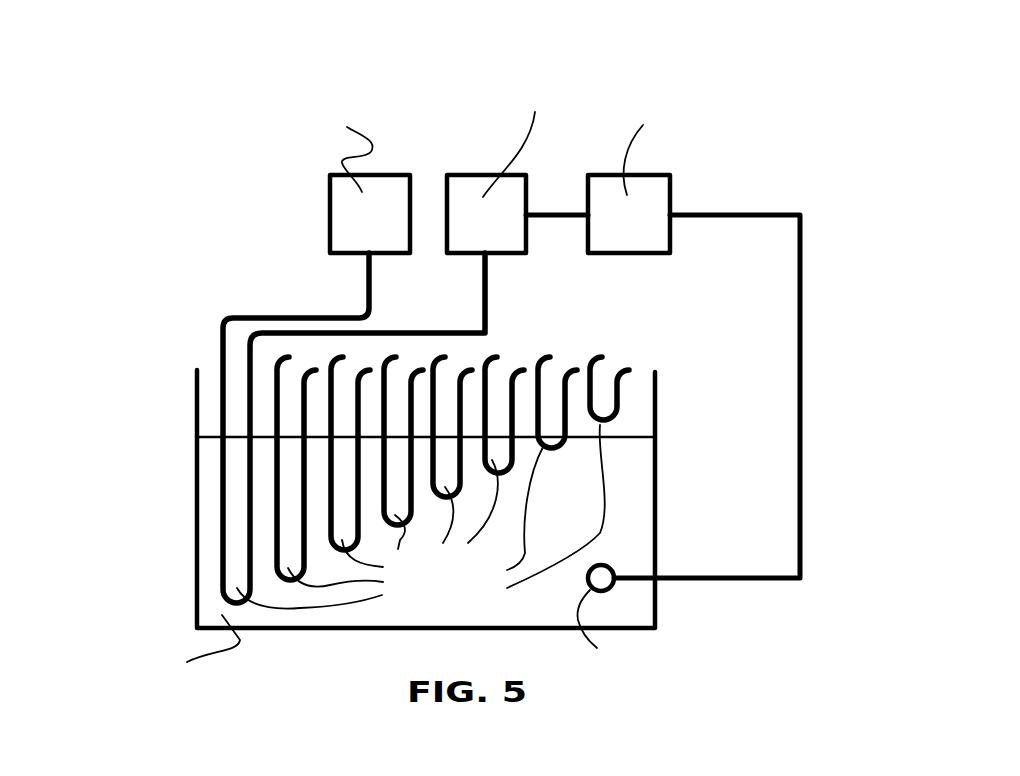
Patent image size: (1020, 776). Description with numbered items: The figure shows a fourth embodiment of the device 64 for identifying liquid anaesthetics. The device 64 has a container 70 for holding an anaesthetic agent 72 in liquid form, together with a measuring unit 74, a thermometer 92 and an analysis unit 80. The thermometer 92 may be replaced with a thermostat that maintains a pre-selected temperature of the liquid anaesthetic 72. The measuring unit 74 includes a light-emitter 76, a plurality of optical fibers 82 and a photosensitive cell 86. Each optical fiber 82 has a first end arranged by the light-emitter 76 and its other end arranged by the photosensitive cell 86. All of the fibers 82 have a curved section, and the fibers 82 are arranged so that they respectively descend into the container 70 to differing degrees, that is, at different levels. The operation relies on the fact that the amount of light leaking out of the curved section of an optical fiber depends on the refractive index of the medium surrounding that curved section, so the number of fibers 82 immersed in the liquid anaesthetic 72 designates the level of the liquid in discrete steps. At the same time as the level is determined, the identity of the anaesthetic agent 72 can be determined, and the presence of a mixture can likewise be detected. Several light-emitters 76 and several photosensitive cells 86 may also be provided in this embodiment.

The device 64 is at (487, 123).
The container 70 is at (655, 384).
The anaesthetic agent 72 is at (615, 502).
The measuring unit 74 is at (265, 191).
The light-emitter 76 is at (335, 162).
The analysis unit 80 is at (663, 334).
The optical fibers 82 is at (680, 438).
The photosensitive cell 86 is at (535, 137).
The thermometer 92 is at (611, 587).